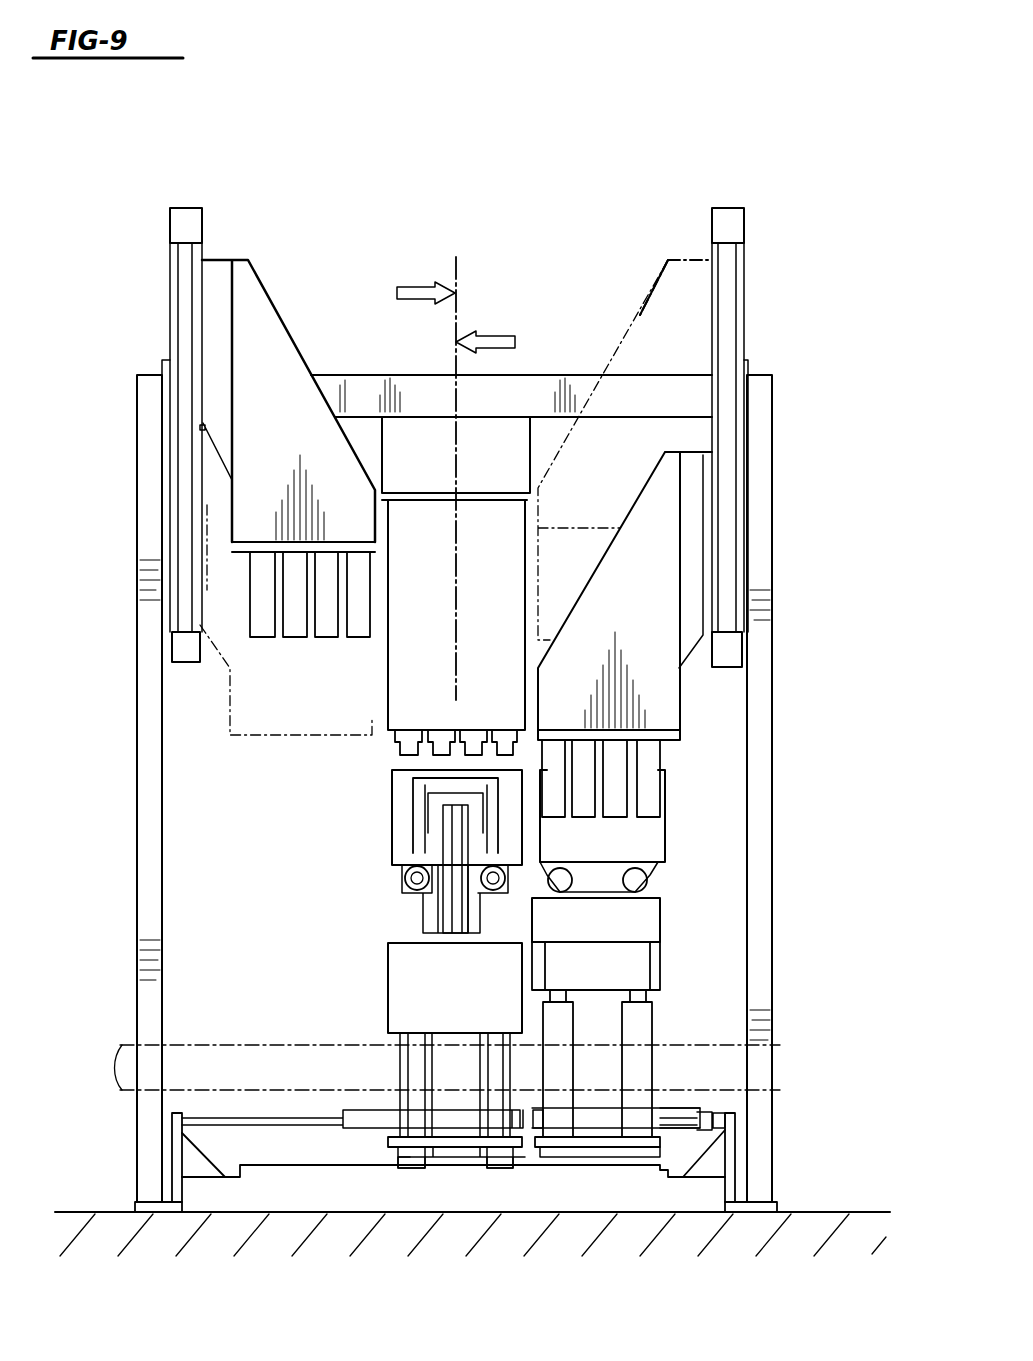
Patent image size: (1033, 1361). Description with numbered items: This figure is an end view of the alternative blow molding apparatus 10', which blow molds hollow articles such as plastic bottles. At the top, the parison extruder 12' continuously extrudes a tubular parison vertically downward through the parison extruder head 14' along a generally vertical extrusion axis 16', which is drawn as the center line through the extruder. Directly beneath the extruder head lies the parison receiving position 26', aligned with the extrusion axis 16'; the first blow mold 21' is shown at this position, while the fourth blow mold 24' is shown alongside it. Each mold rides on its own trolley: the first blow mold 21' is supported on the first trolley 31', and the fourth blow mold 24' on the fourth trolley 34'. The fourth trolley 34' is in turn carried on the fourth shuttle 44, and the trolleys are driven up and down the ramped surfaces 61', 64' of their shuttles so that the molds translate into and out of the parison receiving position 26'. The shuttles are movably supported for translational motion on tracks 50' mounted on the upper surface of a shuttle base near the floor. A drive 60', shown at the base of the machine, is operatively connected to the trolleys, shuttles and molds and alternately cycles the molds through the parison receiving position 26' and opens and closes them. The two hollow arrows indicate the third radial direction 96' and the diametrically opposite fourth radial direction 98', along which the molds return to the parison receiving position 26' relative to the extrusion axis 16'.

The blow molding apparatus 10' is at (472, 663).
The parison extruder 12' is at (501, 586).
The parison extruder head 14' is at (680, 595).
The extrusion axis 16' is at (505, 449).
The first blow mold 21' is at (368, 851).
The parison receiving position 26' is at (368, 851).
The fourth blow mold 24' is at (685, 831).
The first trolley 31' is at (391, 1055).
The ramped surface 61' is at (391, 1055).
The fourth trolley 34' is at (681, 942).
The fourth shuttle 44 is at (703, 1073).
The ramped surface 64' is at (703, 1073).
The tracks 50' is at (455, 1234).
The drive 60' is at (521, 1192).
The third radial direction 96' is at (402, 260).
The fourth radial direction 98' is at (513, 310).